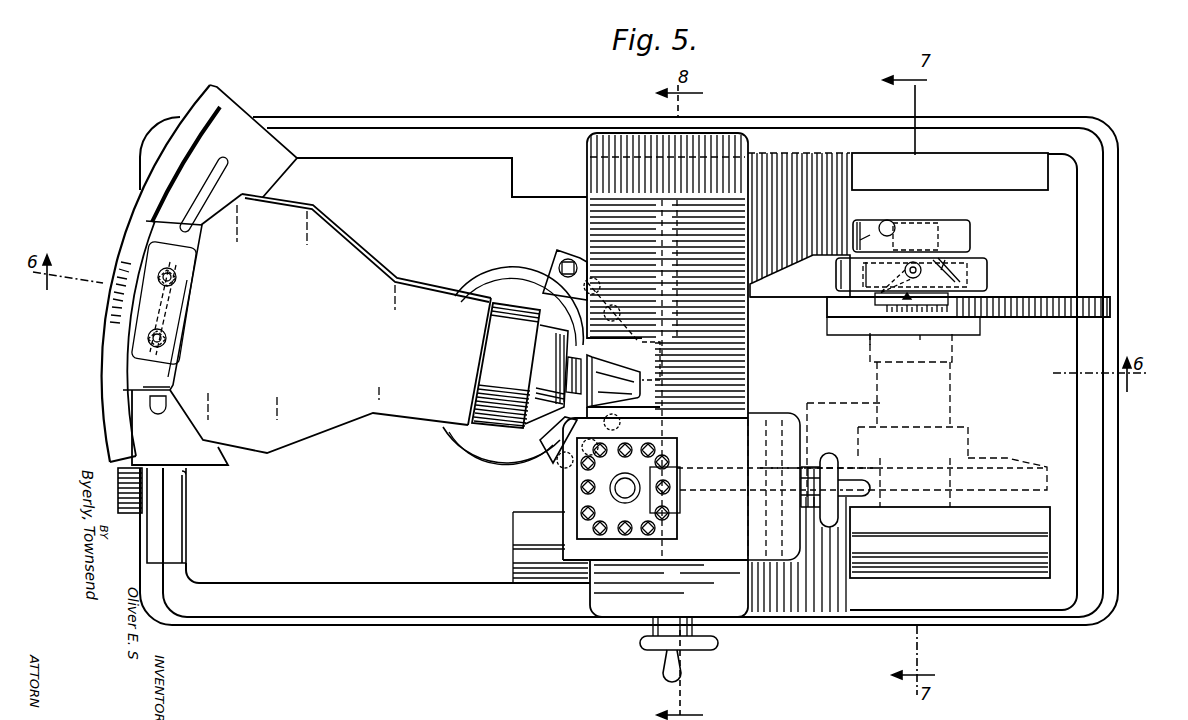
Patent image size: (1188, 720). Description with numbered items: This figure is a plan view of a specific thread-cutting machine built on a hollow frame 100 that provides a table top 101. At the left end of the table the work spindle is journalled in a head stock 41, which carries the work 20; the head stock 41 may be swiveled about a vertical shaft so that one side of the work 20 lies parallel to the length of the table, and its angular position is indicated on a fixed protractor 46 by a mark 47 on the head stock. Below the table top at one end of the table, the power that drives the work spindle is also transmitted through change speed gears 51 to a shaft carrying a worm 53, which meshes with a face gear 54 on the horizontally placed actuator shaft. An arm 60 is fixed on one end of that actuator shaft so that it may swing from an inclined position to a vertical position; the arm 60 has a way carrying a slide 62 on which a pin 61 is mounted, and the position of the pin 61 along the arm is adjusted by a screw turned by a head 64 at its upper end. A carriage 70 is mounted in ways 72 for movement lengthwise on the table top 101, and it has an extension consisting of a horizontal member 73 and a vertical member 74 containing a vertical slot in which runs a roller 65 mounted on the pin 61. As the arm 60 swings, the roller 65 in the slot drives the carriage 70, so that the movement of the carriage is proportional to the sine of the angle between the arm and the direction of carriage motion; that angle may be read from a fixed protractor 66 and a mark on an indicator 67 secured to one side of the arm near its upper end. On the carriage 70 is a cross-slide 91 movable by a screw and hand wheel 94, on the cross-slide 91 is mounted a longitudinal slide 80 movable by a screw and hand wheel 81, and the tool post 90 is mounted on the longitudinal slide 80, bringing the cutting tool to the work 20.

The hollow frame 100 is at (1113, 242).
The table top 101 is at (1043, 230).
The ways 72 is at (962, 165).
The carriage 70 is at (815, 140).
The horizontal member 73 is at (818, 263).
The vertical member 74 is at (955, 227).
The roller 65 is at (888, 223).
The pin 61 is at (914, 262).
The head 64 is at (865, 246).
The arm 60 is at (987, 256).
The slide 62 is at (947, 283).
The indicator 67 is at (905, 297).
The fixed protractor 66 is at (909, 326).
The cross-slide 91 is at (733, 375).
The longitudinal slide 80 is at (737, 547).
The tool post 90 is at (670, 528).
The hand wheel 94 is at (660, 654).
The hand wheel 81 is at (828, 453).
The worm 53 is at (867, 410).
The face gear 54 is at (990, 457).
The work 20 is at (603, 377).
The head stock 41 is at (163, 355).
The fixed protractor 46 is at (132, 306).
The mark 47 is at (128, 330).
The change speed gears 51 is at (118, 483).